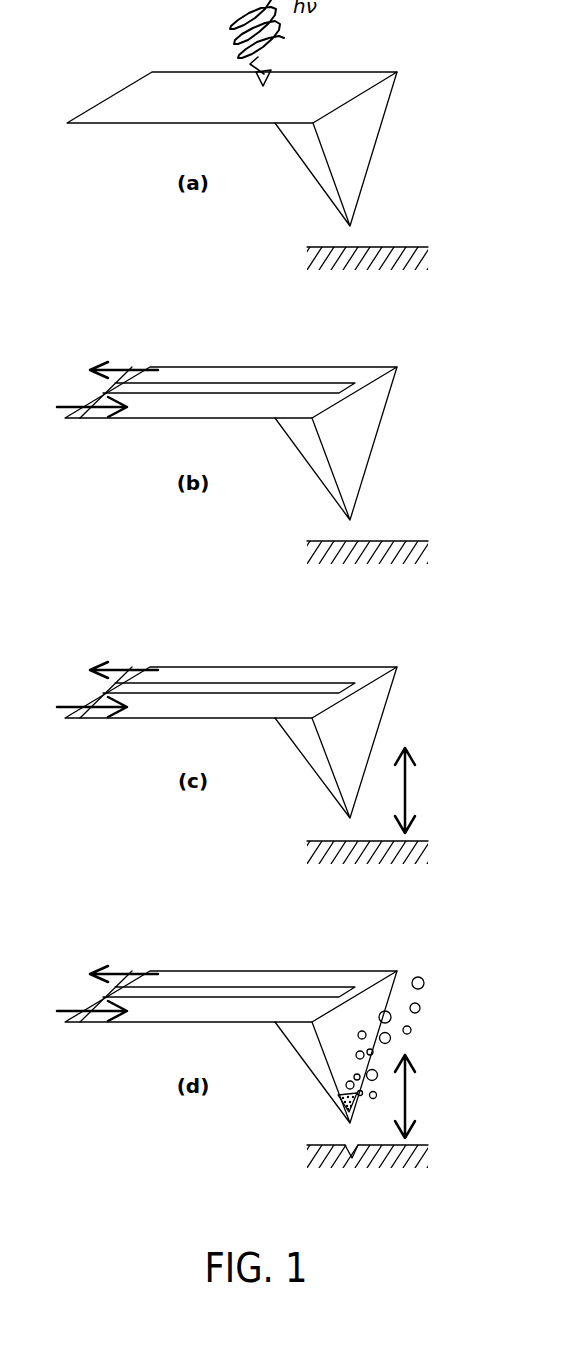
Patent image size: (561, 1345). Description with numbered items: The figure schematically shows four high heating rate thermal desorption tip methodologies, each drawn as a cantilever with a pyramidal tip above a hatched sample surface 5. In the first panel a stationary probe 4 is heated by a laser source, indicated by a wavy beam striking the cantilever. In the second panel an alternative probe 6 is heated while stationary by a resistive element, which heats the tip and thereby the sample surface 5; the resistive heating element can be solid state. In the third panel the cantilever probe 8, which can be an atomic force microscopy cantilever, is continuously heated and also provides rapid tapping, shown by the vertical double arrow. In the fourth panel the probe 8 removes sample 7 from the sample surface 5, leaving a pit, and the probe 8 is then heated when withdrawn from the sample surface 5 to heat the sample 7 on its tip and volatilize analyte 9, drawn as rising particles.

The probe 4 is at (358, 157).
The sample surface 5 is at (352, 1148).
The alternative probe 6 is at (358, 457).
The sample 7 is at (338, 1103).
The cantilever probe 8 is at (358, 757).
The analyte 9 is at (425, 980).